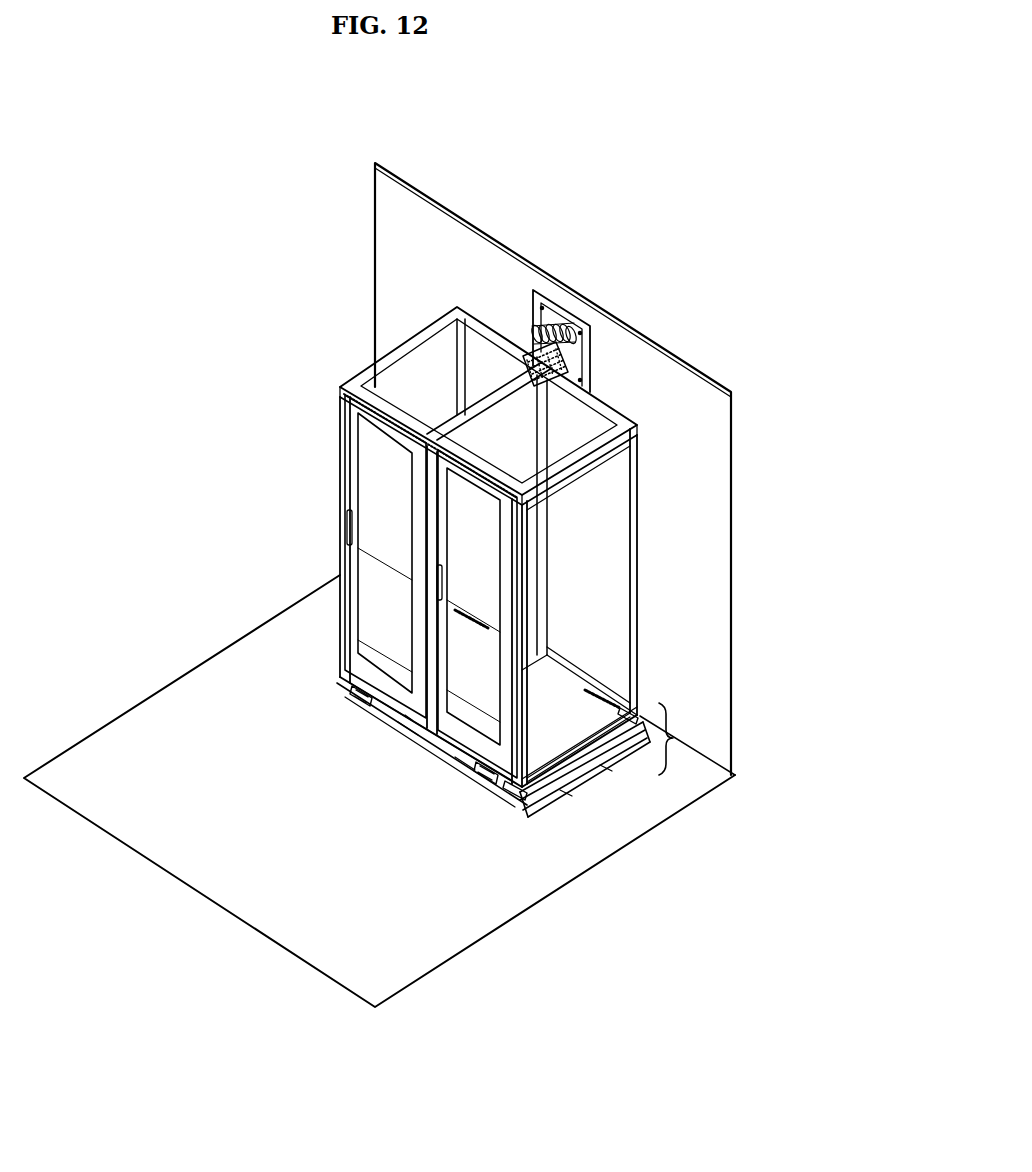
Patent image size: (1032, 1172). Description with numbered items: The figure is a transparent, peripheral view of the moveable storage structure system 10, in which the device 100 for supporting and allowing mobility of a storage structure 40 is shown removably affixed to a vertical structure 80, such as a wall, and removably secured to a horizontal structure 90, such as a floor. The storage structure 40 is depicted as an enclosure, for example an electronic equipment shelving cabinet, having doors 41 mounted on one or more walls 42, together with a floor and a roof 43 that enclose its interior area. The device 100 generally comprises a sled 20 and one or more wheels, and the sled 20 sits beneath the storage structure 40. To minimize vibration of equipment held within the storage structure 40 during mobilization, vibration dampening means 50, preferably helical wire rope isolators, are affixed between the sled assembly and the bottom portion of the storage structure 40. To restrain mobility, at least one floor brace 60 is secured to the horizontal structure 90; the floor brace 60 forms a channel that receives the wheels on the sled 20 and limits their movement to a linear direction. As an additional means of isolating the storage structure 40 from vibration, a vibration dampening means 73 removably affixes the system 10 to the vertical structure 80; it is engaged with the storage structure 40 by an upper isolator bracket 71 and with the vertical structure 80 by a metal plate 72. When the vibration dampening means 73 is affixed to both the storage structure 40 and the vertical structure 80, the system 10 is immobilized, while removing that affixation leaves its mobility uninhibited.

The moveable storage structure system 10 is at (676, 512).
The sled 20 is at (425, 732).
The storage structure 40 is at (432, 463).
The doors 41 is at (470, 665).
The walls 42 is at (590, 622).
The roof 43 is at (425, 360).
The vibration dampening means 50 is at (480, 770).
The floor brace 60 is at (562, 800).
The upper isolator bracket 71 is at (568, 378).
The metal plate 72 is at (563, 320).
The vibration dampening means 73 is at (553, 350).
The vertical structure 80 is at (380, 212).
The horizontal structure 90 is at (633, 797).
The device 100 is at (676, 735).